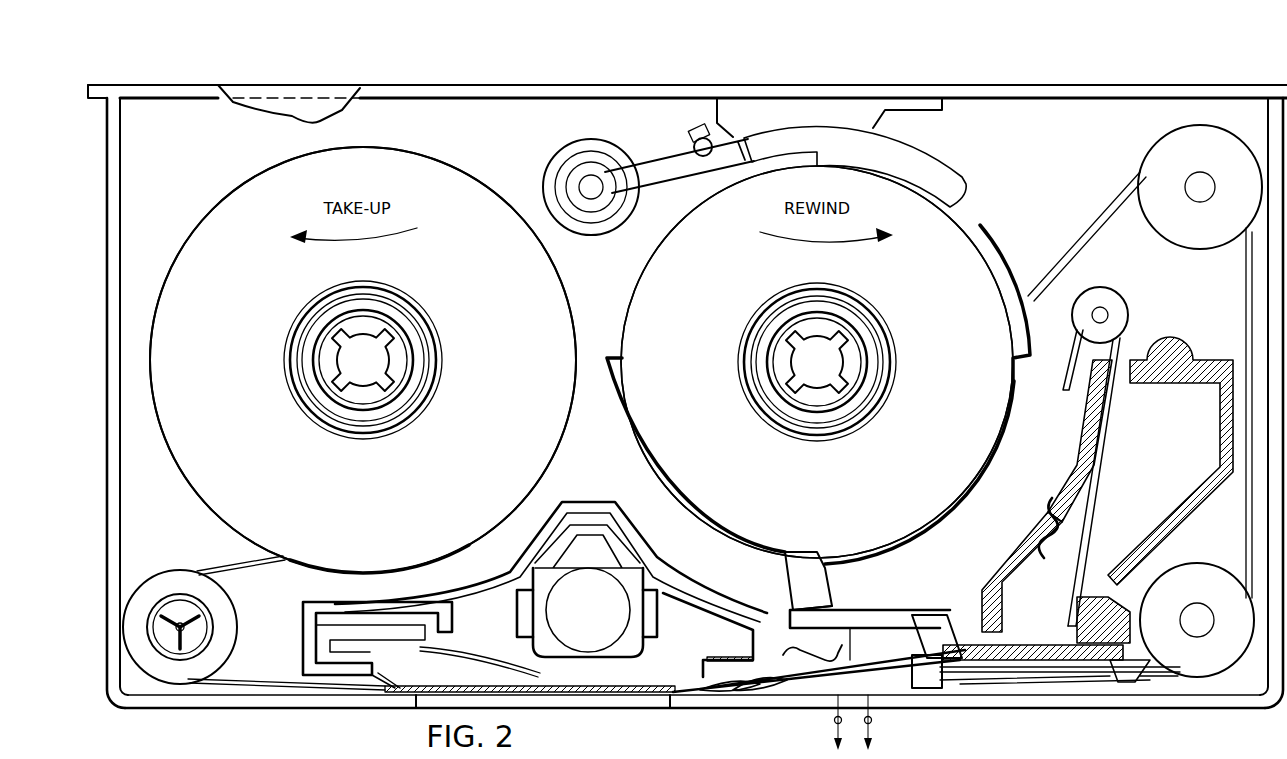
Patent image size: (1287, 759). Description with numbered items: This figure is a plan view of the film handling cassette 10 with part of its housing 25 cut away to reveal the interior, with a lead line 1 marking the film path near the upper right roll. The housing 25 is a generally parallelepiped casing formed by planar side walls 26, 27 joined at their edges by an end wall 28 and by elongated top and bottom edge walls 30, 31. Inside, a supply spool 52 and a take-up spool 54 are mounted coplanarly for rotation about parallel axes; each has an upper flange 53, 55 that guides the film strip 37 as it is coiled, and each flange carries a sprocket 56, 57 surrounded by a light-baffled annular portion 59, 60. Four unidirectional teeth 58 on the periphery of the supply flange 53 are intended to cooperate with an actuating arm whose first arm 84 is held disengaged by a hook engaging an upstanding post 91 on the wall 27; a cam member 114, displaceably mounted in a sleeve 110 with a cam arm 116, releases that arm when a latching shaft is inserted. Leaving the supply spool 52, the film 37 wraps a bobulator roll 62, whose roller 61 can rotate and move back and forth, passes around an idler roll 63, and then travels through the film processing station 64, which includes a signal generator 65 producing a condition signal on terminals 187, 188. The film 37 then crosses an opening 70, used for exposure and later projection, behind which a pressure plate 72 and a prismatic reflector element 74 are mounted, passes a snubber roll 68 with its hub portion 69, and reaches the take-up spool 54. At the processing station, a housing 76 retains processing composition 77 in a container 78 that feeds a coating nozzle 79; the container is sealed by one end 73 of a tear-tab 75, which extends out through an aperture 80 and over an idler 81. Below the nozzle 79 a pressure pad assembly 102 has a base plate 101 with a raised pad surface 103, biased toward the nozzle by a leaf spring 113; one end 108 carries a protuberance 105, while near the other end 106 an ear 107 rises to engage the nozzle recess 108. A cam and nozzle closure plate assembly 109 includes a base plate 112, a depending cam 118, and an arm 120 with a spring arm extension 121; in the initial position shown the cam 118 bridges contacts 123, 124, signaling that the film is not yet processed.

The tape 1 is at (1082, 238).
The cassette 10 is at (96, 74).
The housing 25 is at (149, 535).
The side wall 26 is at (250, 106).
The side wall 27 is at (1225, 105).
The end wall 28 is at (107, 241).
The top edge wall 30 is at (90, 100).
The bottom edge wall 31 is at (213, 708).
The film strip 37 is at (230, 568).
The supply spool 52 is at (992, 212).
The upper flange of supply spool 53 is at (994, 274).
The take-up spool 54 is at (492, 162).
The upper flange of take-up spool 55 is at (546, 266).
The sprocket 56 is at (850, 330).
The sprocket 57 is at (400, 313).
The unidirectional teeth 58 is at (618, 345).
The light-baffled annular portion 59 is at (875, 340).
The light-baffled annular portion 60 is at (425, 348).
The bobulator roller 61 is at (1230, 246).
The bobulator roll 62 is at (1158, 132).
The idler roll 63 is at (1212, 560).
The film processing station 64 is at (1062, 420).
The signal generator 65 is at (888, 740).
The snubber roll 68 is at (248, 590).
The hub portion 69 is at (210, 622).
The opening 70 is at (573, 710).
The pressure plate 72 is at (662, 690).
The end of tear-tab 73 is at (1090, 521).
The prismatic reflector element 74 is at (612, 598).
The tear-tab 75 is at (1068, 345).
The housing 76 is at (1075, 450).
The processing composition 77 is at (1158, 453).
The container 78 is at (1021, 618).
The coating nozzle 79 is at (1040, 650).
The aperture 80 is at (1118, 365).
The idler 81 is at (1112, 282).
The first arm 84 is at (760, 156).
The post 91 is at (704, 138).
The base plate 101 is at (1045, 690).
The pressure pad assembly 102 is at (1066, 698).
The pad surface 103 is at (1033, 656).
The protuberance 105 is at (1145, 680).
The other end of plate 106 is at (895, 752).
The ear 107 is at (865, 640).
The end of pressure pad assembly 108 is at (930, 640).
The cam and nozzle closure plate assembly 109 is at (849, 625).
The sleeve 110 is at (598, 140).
The base plate 112 is at (835, 640).
The leaf spring 113 is at (1100, 690).
The cam member 114 is at (590, 183).
The cam arm 116 is at (665, 160).
The cam 118 is at (835, 722).
The arm 120 is at (765, 690).
The spring arm extension 121 is at (735, 690).
The contact 123 is at (825, 665).
The contact 124 is at (886, 666).
The terminal 187 is at (836, 745).
The terminal 188 is at (870, 720).